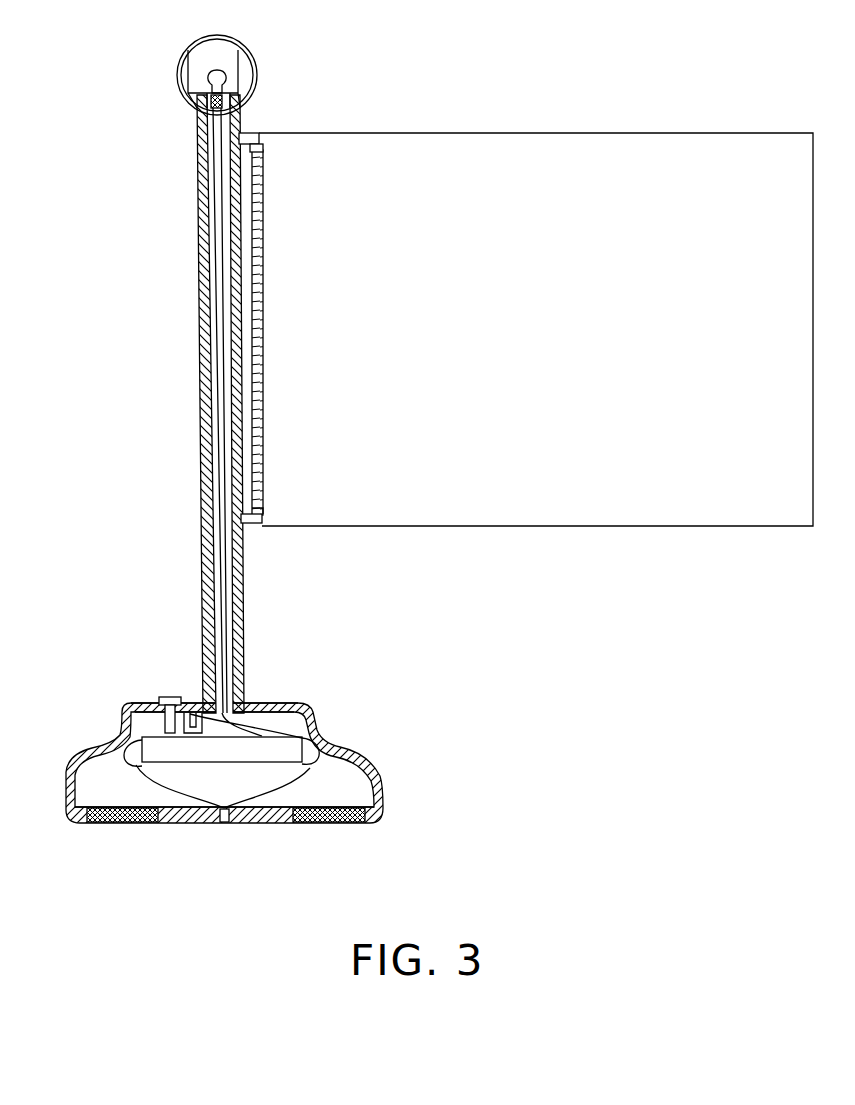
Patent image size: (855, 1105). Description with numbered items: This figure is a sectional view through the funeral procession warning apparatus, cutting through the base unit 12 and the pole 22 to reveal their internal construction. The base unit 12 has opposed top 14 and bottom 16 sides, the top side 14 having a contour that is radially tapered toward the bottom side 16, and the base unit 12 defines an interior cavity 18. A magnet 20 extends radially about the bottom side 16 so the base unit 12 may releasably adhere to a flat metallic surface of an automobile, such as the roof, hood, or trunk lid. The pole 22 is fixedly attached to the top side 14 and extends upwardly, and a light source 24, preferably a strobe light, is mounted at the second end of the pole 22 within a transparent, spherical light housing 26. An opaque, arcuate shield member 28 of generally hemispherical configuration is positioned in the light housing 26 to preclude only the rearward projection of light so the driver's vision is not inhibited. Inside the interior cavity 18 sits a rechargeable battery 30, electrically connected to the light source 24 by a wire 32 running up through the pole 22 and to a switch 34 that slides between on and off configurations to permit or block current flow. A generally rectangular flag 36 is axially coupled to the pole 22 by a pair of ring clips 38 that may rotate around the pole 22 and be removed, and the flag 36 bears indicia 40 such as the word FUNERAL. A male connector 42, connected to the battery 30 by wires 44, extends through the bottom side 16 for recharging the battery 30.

The base unit 12 is at (395, 702).
The top side 14 is at (282, 705).
The bottom side 16 is at (190, 823).
The interior cavity 18 is at (350, 783).
The magnet 20 is at (108, 823).
The pole 22 is at (205, 568).
The light source 24 is at (216, 85).
The light housing 26 is at (247, 54).
The shield member 28 is at (190, 60).
The rechargeable battery 30 is at (150, 748).
The wire 32 is at (223, 607).
The switch 34 is at (138, 688).
The flag 36 is at (727, 476).
The ring clips 38 is at (238, 137).
The indicia 40 is at (548, 300).
The male connector 42 is at (226, 823).
The wires 44 is at (173, 775).